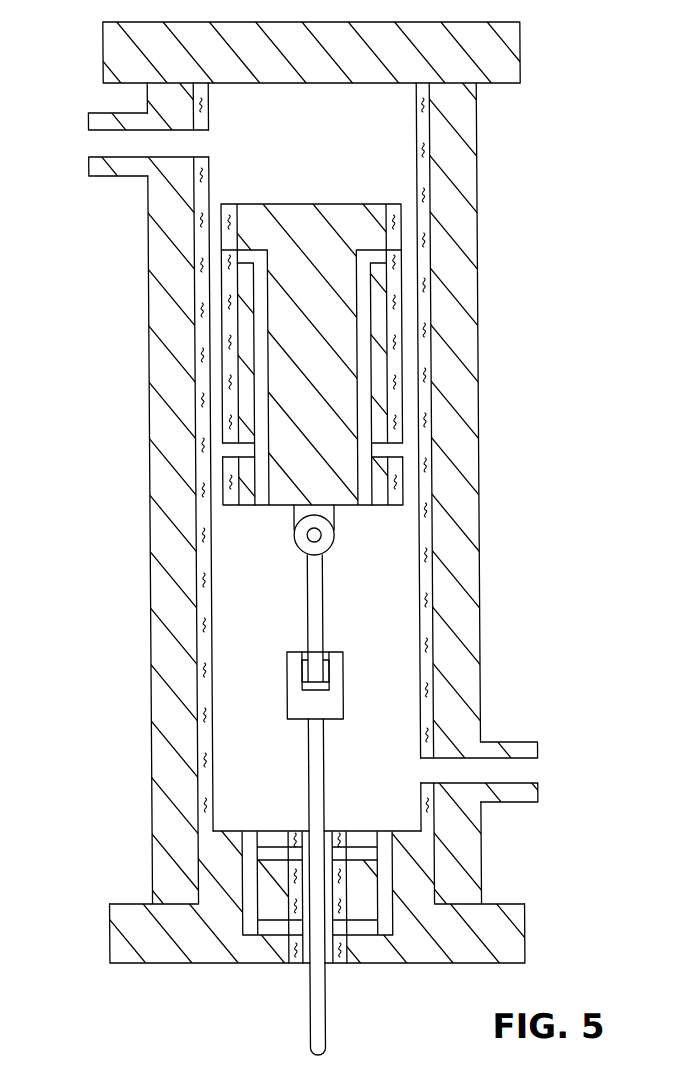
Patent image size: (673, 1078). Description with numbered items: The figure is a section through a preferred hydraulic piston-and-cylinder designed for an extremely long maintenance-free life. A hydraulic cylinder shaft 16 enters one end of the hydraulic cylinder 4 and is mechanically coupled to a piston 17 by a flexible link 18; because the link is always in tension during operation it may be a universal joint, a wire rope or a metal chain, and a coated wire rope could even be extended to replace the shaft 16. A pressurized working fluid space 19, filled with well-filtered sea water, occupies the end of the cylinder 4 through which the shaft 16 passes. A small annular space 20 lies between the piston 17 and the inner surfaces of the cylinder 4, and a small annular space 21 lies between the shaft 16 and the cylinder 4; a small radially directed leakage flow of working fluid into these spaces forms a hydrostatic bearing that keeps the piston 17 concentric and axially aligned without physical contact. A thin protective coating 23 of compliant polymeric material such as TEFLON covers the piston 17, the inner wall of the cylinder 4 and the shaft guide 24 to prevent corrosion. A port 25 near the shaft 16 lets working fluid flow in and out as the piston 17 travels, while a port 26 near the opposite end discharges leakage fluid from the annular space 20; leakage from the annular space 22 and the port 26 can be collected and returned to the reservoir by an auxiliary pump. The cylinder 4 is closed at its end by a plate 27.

The hydraulic cylinder 4 is at (480, 330).
The hydraulic cylinder shaft 16 is at (319, 1033).
The piston 17 is at (337, 204).
The flexible link 18 is at (319, 611).
The pressurized working fluid space 19 is at (266, 762).
The annular space 20 is at (219, 505).
The annular space 21 is at (325, 830).
The annular space 22 is at (360, 505).
The protective coating 23 is at (226, 202).
The shaft guide 24 is at (406, 964).
The port 25 is at (533, 772).
The port 26 is at (97, 143).
The plate 27 is at (513, 71).